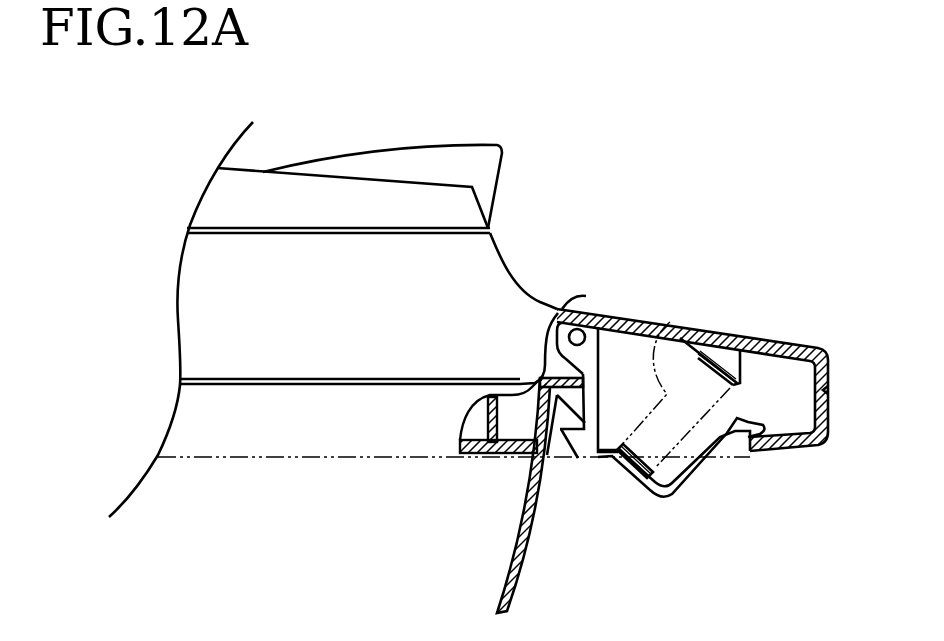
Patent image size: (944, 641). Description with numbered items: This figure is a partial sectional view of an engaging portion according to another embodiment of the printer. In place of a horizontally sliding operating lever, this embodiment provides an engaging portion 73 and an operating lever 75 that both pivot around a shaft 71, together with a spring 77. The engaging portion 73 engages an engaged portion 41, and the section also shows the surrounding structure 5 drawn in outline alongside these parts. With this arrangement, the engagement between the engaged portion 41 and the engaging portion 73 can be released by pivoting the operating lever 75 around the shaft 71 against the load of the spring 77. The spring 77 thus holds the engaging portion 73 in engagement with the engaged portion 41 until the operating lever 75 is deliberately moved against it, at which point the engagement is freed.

The vehicle body panel 5 is at (477, 265).
The engaged portion 41 is at (560, 418).
The shaft 71 is at (577, 337).
The engaging portion 73 is at (585, 447).
The operating lever 75 is at (675, 488).
The spring 77 is at (670, 322).